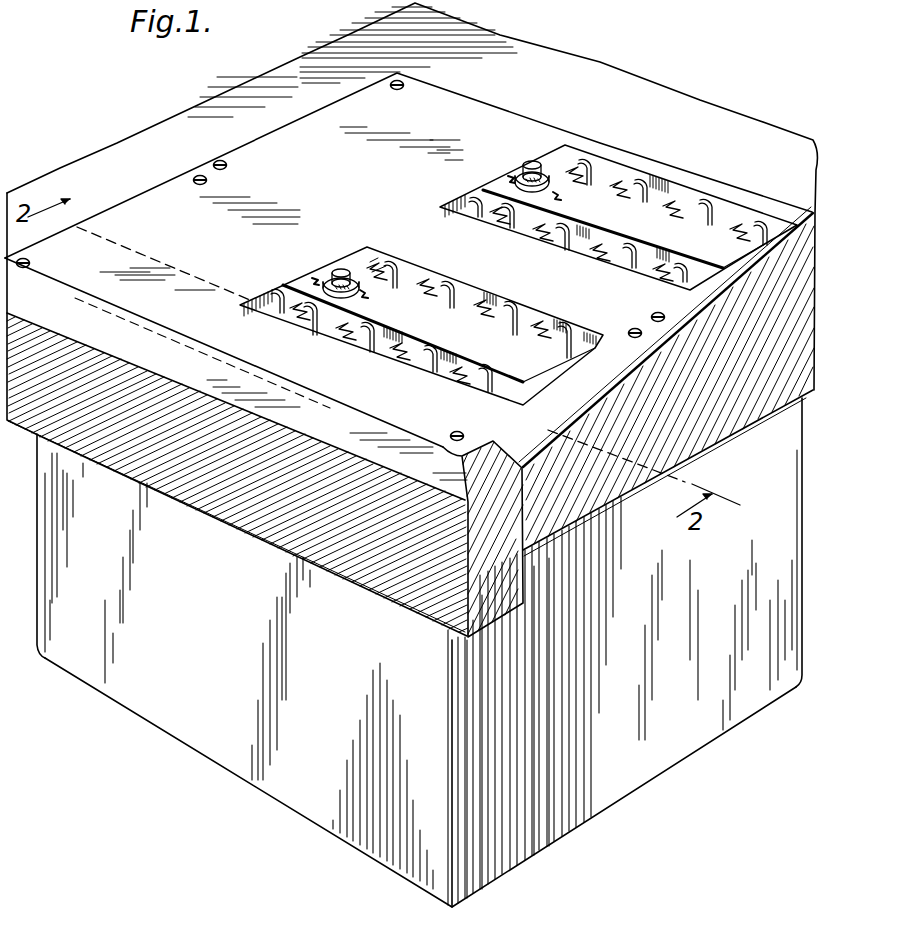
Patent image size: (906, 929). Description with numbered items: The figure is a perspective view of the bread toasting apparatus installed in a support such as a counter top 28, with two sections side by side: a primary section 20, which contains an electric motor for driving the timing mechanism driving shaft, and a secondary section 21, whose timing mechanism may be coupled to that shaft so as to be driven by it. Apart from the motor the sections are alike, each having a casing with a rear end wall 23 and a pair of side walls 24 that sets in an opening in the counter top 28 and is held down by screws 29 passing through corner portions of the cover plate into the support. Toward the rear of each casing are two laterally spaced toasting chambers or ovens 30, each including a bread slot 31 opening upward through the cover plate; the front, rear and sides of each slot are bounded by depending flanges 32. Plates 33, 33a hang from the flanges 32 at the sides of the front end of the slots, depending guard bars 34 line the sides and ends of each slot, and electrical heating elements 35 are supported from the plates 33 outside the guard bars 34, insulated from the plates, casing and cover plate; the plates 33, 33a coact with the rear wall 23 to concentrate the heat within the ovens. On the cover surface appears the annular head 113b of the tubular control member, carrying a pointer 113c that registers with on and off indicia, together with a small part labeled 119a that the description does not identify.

The primary section 20 is at (171, 175).
The secondary section 21 is at (284, 127).
The rear end wall 23 is at (628, 792).
The side walls 24 is at (166, 680).
The counter top 28 is at (542, 57).
The screws 29 is at (31, 264).
The toasting chamber or oven 30 is at (285, 317).
The bread slot 31 is at (362, 249).
The depending flanges 32 is at (490, 372).
The plate 33 is at (392, 343).
The plate 33a is at (372, 262).
The guard bars 34 is at (455, 290).
The electrical heating elements 35 is at (495, 223).
The annular head 113b is at (340, 297).
The pointer 113c is at (364, 292).
The terminal post 119a is at (332, 273).